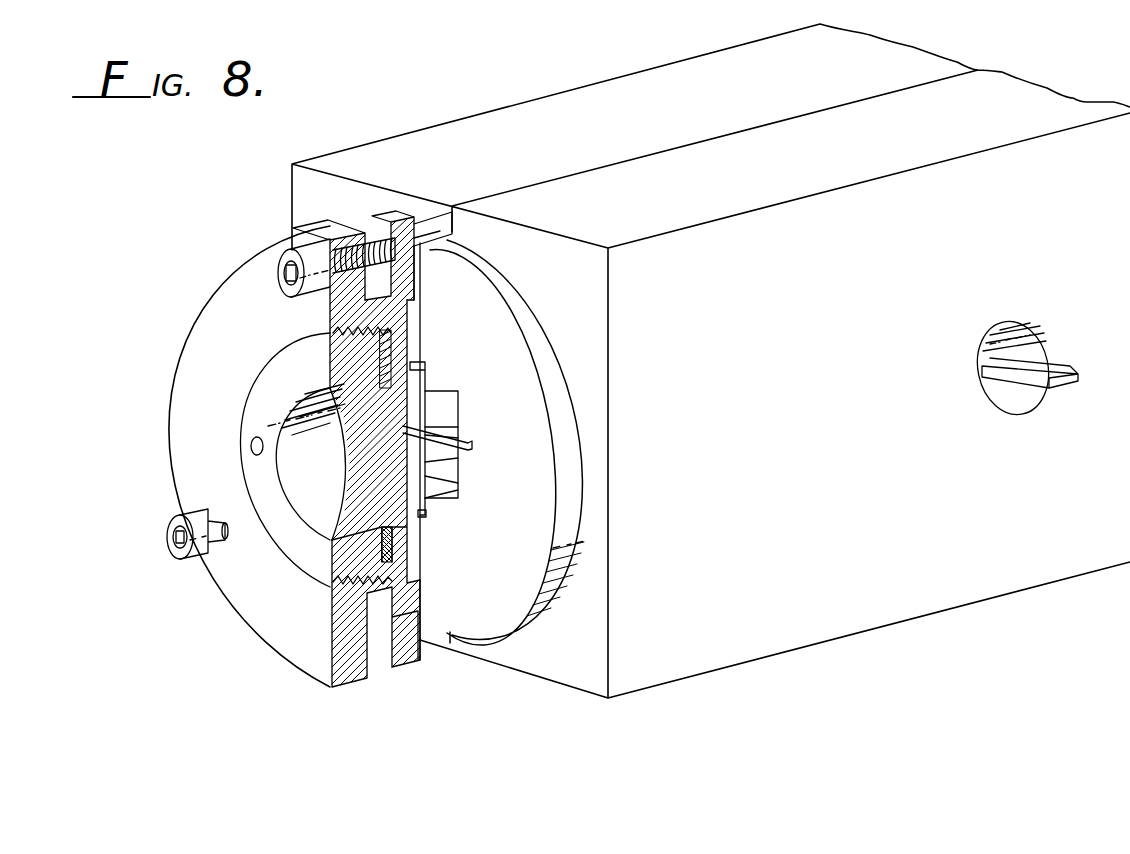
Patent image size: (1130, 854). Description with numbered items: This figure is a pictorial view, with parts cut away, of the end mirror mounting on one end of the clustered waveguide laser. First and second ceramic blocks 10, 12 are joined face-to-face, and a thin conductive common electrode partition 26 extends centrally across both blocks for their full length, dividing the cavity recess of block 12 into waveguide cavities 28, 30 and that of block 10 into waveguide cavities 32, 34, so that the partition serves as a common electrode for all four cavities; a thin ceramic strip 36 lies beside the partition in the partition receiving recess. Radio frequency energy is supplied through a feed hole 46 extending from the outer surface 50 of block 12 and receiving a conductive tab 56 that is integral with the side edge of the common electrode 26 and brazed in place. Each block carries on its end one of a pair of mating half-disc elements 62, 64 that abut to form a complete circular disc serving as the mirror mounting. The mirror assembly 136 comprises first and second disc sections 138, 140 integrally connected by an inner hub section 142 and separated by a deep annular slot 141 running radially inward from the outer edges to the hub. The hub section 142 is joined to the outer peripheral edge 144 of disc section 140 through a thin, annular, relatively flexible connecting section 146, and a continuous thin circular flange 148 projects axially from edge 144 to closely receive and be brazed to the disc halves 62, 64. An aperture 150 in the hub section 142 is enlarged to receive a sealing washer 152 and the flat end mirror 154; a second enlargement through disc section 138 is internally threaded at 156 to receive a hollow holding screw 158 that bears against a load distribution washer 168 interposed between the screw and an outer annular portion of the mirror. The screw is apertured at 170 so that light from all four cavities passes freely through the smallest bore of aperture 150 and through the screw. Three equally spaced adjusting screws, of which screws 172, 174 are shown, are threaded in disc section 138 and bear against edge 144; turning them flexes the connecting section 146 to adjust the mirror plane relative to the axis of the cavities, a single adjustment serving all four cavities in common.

The ceramic block 10 is at (376, 152).
The ceramic block 12 is at (722, 664).
The outer surface 50 is at (866, 453).
The feed hole 46 is at (1031, 328).
The conductive tab 56 is at (1062, 368).
The mirror assembly 136 is at (199, 256).
The hollow holding screw 158 is at (276, 358).
The screw aperture 170 is at (280, 406).
The outer peripheral edge 144 is at (380, 230).
The second disc section 140 is at (392, 213).
The circular flange 148 is at (435, 230).
The connecting section 146 is at (403, 282).
The inner hub section 142 is at (410, 328).
The internal threads 156 is at (335, 333).
The sealing washer 152 is at (405, 348).
The first disc section 138 is at (316, 239).
The adjusting screw 172 is at (300, 252).
The aperture 150 is at (418, 362).
The flat end mirror 154 is at (405, 505).
The waveguide cavity 32 is at (410, 402).
The waveguide cavity 28 is at (445, 415).
The ceramic strip 36 is at (425, 431).
The common electrode partition 26 is at (470, 446).
The waveguide cavity 34 is at (428, 468).
The waveguide cavity 30 is at (452, 484).
The load distribution washer 168 is at (395, 540).
The annular slot 141 is at (378, 657).
The half-disc element 62 is at (408, 600).
The half-disc element 64 is at (497, 603).
The adjusting screw 174 is at (183, 518).